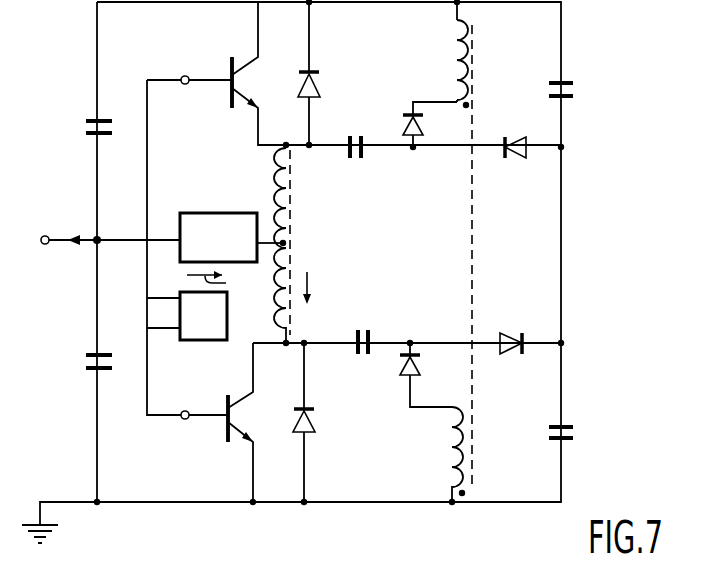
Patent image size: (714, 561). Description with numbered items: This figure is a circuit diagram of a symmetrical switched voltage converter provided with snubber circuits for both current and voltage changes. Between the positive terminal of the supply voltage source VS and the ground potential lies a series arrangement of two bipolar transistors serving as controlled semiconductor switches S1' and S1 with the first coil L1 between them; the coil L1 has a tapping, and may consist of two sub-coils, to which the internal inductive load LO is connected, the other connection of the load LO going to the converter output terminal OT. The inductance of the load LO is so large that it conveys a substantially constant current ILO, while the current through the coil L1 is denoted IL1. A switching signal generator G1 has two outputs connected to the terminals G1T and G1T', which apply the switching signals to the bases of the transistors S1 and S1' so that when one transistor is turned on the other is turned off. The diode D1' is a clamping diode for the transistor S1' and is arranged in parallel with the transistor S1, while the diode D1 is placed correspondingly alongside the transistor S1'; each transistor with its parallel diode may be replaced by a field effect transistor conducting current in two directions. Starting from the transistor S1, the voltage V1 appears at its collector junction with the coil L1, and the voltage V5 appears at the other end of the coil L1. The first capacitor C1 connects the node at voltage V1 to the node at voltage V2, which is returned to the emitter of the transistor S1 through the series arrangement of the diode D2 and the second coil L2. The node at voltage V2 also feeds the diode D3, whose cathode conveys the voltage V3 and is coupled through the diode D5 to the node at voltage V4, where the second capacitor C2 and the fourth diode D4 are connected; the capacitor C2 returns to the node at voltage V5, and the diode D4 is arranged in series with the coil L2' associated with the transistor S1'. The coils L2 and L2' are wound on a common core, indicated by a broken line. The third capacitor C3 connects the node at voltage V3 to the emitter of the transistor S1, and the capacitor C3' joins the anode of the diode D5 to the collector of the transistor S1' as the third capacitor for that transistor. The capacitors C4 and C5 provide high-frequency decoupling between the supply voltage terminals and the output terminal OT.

The supply voltage source VS is at (52, 20).
The fifth capacitor C5 is at (88, 126).
The fourth capacitor C4 is at (86, 362).
The converter output terminal OT is at (45, 236).
The switching signal terminal G1T' is at (184, 59).
The switching signal terminal G1T is at (179, 397).
The controlled semiconductor switch S1' is at (214, 93).
The controlled semiconductor switch S1 is at (212, 426).
The inductive load LO is at (233, 212).
The switching signal generator G1 is at (221, 342).
The semiconductor switching element D1 is at (324, 91).
The clamping diode D1' is at (324, 424).
The junction point voltage V5 is at (288, 148).
The second capacitor C2 is at (355, 161).
The fourth semiconductor switching element D4 is at (404, 124).
The junction point voltage V4 is at (413, 151).
The second coil L2' is at (444, 52).
The second coil L2 is at (441, 454).
The third capacitor C3' is at (576, 105).
The third capacitor C3 is at (578, 430).
The fifth diode D5 is at (517, 158).
The first coil L1 is at (280, 228).
The load current ILO is at (226, 281).
The coil current IL1 is at (324, 288).
The junction point voltage V1 is at (288, 339).
The first capacitor C1 is at (366, 328).
The capacitor terminal voltage V2 is at (411, 339).
The second semiconductor switching element D2 is at (402, 375).
The third semiconductor switching element D3 is at (516, 330).
The junction point voltage V3 is at (564, 338).